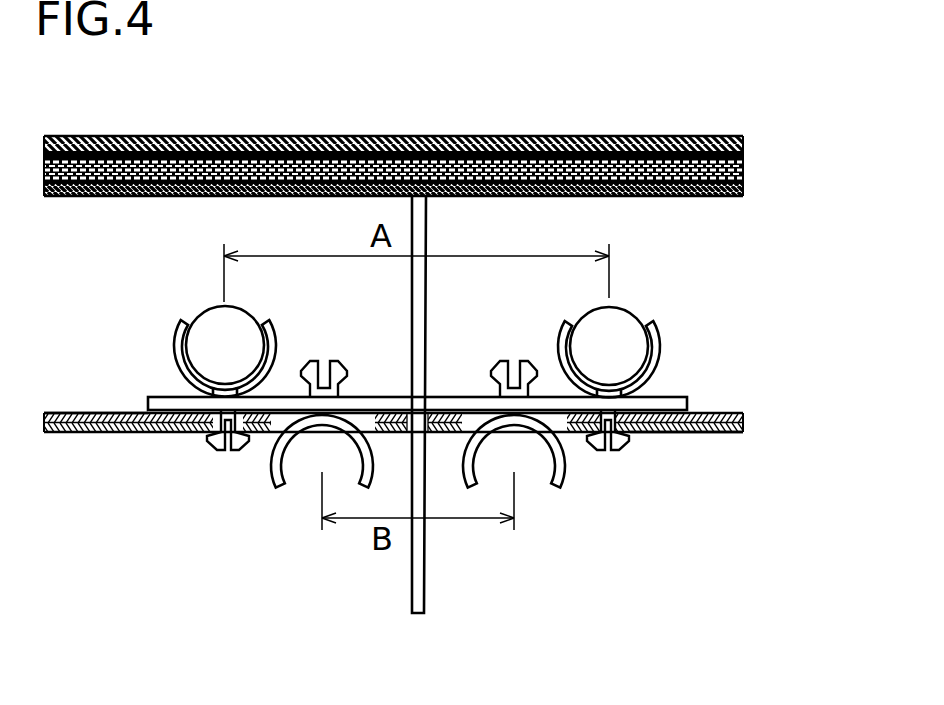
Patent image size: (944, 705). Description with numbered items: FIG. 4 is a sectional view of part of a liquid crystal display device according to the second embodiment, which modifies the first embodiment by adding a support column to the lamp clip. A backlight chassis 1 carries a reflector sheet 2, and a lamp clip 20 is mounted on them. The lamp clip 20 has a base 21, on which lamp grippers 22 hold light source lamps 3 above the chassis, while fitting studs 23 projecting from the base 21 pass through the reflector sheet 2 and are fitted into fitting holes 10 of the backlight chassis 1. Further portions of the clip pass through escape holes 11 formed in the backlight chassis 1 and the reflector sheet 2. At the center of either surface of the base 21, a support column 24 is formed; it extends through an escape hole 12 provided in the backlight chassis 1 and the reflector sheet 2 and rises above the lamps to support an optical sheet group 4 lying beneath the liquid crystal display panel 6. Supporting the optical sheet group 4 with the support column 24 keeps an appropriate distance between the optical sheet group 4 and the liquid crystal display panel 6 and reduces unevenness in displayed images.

The backlight chassis 1 is at (112, 432).
The reflector sheet 2 is at (72, 412).
The light source lamp 3 is at (632, 310).
The optical sheet group 4 is at (687, 196).
The liquid crystal display panel 6 is at (687, 136).
The fitting hole 10 is at (648, 432).
The escape hole 11 is at (267, 432).
The escape hole 12 is at (428, 430).
The lamp clip 20 is at (155, 337).
The base 21 is at (379, 397).
The lamp gripper 22 is at (660, 343).
The fitting stud 23 is at (602, 450).
The support column 24 is at (428, 232).